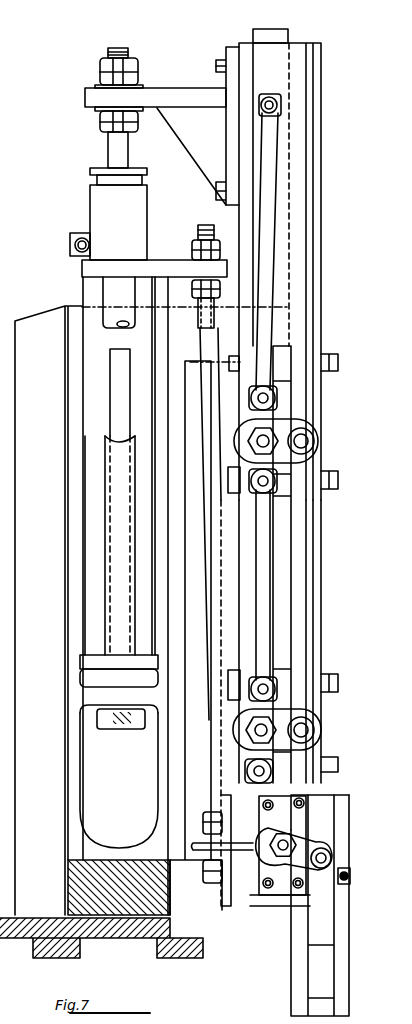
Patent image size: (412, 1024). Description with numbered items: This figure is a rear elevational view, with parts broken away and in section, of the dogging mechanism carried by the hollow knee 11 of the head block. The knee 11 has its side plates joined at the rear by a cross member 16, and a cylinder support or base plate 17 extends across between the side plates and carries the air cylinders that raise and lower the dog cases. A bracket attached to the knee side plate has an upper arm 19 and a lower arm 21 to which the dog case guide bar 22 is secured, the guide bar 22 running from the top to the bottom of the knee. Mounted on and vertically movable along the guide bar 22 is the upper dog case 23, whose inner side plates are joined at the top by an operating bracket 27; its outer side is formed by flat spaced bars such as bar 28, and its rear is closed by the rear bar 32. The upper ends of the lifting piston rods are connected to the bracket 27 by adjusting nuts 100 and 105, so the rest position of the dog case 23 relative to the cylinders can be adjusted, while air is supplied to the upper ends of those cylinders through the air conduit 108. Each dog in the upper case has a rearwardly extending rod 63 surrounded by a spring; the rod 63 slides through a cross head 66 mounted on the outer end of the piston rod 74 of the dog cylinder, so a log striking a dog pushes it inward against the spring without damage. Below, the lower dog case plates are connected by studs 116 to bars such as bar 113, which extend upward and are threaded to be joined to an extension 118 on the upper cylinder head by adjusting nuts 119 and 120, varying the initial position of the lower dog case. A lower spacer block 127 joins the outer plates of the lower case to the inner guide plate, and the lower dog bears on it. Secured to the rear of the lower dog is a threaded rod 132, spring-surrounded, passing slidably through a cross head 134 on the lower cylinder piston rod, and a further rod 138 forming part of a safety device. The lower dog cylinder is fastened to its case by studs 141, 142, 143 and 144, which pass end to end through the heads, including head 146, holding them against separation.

The hollow knee 11 is at (70, 886).
The cross member 16 is at (122, 846).
The cylinder support or base plate 17 is at (92, 700).
The upper arm 19 is at (186, 330).
The lower arm 21 is at (193, 858).
The dog case guide bar 22 is at (282, 37).
The upper dog case 23 is at (322, 155).
The operating bracket 27 is at (185, 96).
The flat spaced bar 28 is at (316, 612).
The rear bar 32 is at (305, 282).
The rod 63 is at (312, 446).
The cross head 66 is at (312, 432).
The piston rod 74 is at (258, 441).
The adjusting nut 100 is at (103, 80).
The adjusting nut 105 is at (103, 122).
The air conduit 108 is at (72, 244).
The bar 113 is at (212, 728).
The stud 116 is at (203, 820).
The extension 118 is at (165, 277).
The adjusting nut 119 is at (222, 258).
The adjusting nut 120 is at (192, 290).
The lower spacer block 127 is at (318, 1010).
The rod 132 is at (312, 843).
The cross head 134 is at (322, 848).
The rod 138 is at (340, 893).
The stud 141 is at (263, 810).
The stud 142 is at (304, 810).
The stud 143 is at (266, 880).
The stud 144 is at (298, 890).
The cylinder head 146 is at (288, 897).